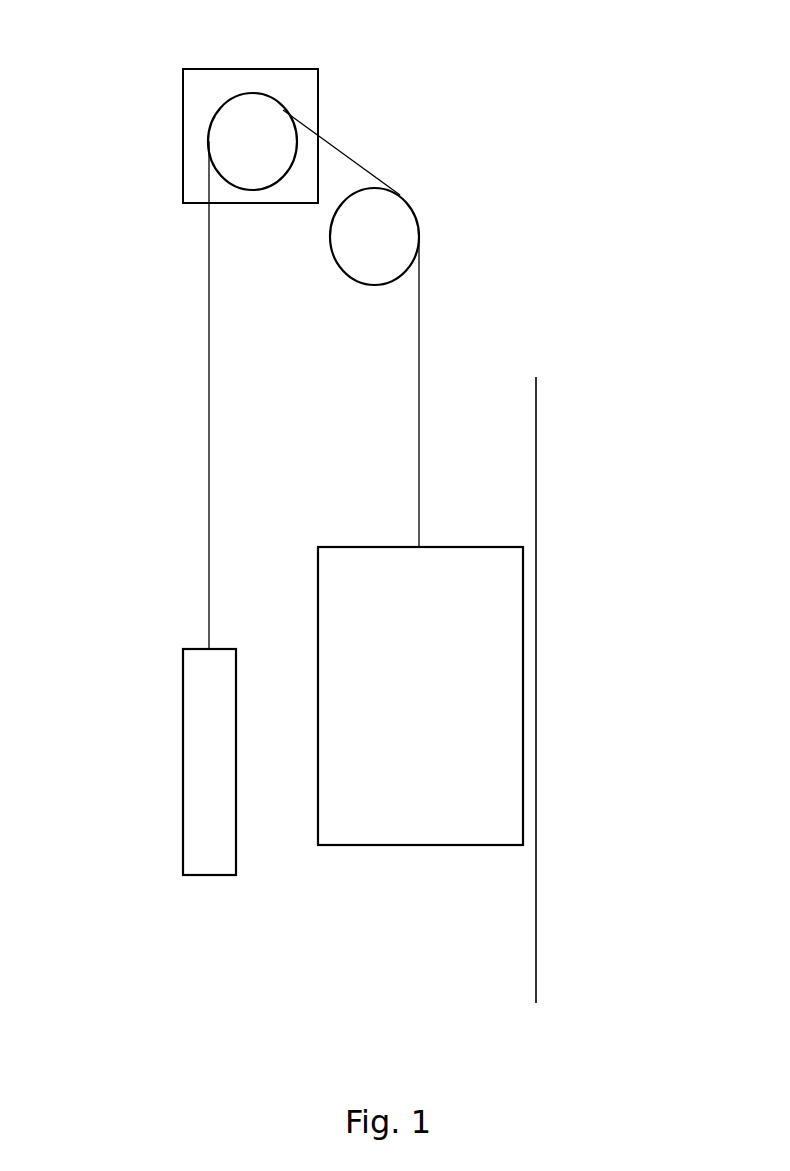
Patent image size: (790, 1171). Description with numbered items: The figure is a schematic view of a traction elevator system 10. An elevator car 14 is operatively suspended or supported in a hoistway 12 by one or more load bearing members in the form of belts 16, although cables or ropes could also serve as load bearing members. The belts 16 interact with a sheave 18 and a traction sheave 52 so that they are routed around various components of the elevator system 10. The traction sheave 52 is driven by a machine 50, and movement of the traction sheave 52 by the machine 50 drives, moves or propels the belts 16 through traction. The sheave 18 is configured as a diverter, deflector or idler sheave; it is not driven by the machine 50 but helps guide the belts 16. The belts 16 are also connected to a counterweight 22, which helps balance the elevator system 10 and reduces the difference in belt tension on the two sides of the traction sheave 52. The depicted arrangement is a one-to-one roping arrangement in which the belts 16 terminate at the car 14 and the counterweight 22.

The elevator system 10 is at (462, 62).
The hoistway 12 is at (536, 439).
The elevator car 14 is at (421, 712).
The belts 16 is at (192, 404).
The sheave 18 is at (391, 252).
The counterweight 22 is at (225, 773).
The machine 50 is at (183, 124).
The traction sheave 52 is at (268, 157).